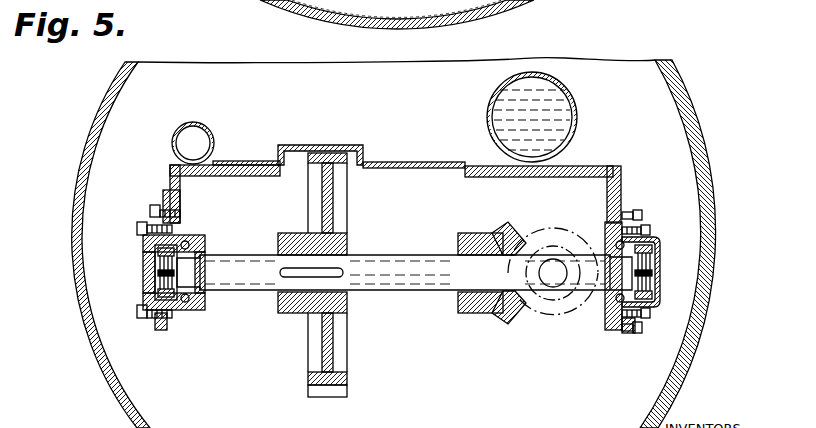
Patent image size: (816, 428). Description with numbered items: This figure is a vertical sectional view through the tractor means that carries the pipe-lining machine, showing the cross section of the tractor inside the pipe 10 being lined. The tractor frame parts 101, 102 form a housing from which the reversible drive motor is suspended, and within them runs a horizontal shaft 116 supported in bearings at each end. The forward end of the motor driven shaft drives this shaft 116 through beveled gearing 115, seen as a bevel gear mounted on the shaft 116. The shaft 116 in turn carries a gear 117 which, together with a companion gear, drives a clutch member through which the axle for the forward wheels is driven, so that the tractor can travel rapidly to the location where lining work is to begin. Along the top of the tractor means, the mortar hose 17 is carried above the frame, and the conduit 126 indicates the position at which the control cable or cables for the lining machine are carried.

The wheel shell housing 10 is at (702, 134).
The mortar hose 17 is at (488, 108).
The conduit 126 is at (197, 122).
The tractor frame part 101 is at (180, 190).
The tractor frame part 102 is at (607, 180).
The beveled gearing 115 is at (523, 312).
The shaft 116 is at (391, 292).
The gear 117 is at (308, 355).